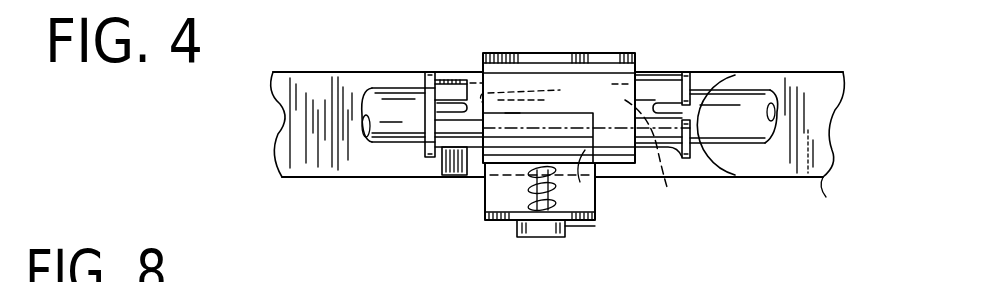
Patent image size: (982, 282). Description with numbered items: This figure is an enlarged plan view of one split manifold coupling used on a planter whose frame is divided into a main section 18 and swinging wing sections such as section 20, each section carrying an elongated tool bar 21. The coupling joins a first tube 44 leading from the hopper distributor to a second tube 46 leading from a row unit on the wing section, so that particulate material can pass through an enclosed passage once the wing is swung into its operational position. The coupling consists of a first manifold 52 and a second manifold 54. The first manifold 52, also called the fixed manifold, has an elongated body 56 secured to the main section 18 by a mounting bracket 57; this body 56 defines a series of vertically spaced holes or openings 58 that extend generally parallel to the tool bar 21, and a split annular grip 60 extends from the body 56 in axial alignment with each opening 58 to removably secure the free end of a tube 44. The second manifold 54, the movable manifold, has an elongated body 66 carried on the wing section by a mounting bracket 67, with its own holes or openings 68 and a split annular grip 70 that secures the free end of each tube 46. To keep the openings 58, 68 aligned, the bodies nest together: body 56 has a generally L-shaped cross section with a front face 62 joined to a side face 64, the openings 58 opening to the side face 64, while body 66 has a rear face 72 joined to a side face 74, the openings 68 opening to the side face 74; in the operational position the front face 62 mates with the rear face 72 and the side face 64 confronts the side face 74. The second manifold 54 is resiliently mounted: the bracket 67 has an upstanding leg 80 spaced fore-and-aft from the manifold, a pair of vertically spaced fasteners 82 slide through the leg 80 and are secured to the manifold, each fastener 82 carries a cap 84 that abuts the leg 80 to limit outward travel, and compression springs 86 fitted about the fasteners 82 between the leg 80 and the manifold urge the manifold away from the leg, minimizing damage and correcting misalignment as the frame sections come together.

The main section 18 is at (749, 179).
The section 20 is at (350, 40).
The tool bar 21 is at (280, 149).
The first tube 44 is at (745, 110).
The second tube 46 is at (392, 138).
The first manifold 52 is at (638, 68).
The second manifold 54 is at (482, 151).
The elongated body 56 is at (576, 72).
The mounting bracket 57 is at (484, 55).
The holes or openings 58 is at (658, 156).
The split annular grip 60 is at (700, 74).
The front face 62 is at (542, 122).
The side face 64 is at (582, 152).
The elongated body 66 is at (510, 157).
The mounting bracket 67 is at (586, 226).
The holes or openings 68 is at (474, 84).
The split annular grip 70 is at (432, 86).
The rear face 72 is at (510, 113).
The side face 74 is at (597, 117).
The upstanding leg 80 is at (505, 222).
The fasteners 82 is at (536, 235).
The cap 84 is at (553, 229).
The compression springs 86 is at (582, 195).